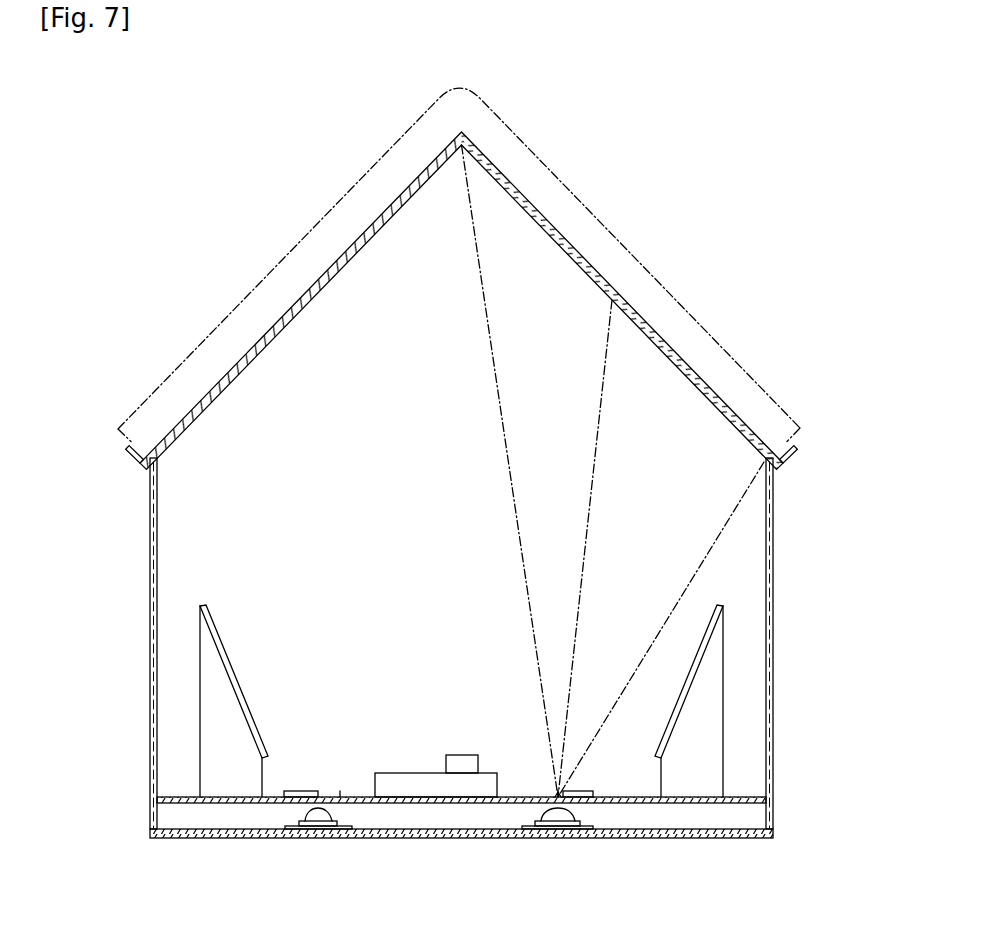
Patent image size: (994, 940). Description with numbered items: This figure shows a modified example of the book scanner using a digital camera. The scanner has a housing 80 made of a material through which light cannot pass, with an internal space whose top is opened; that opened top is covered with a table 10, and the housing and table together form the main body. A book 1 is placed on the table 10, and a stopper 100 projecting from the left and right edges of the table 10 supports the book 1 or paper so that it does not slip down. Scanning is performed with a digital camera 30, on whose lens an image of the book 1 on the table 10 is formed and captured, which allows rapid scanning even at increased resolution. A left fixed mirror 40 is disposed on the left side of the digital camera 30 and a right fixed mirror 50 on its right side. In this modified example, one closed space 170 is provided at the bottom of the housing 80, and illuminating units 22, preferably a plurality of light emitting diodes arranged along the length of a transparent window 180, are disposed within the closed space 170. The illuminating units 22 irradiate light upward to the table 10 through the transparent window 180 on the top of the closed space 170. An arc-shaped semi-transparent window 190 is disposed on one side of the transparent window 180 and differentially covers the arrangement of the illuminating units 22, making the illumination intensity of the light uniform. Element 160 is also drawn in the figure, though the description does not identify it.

The book 1 is at (612, 222).
The table 10 is at (403, 192).
The stopper 100 is at (128, 456).
The housing 80 is at (150, 683).
The closed space 170 is at (750, 808).
The left fixed mirror 40 is at (250, 733).
The right fixed mirror 50 is at (653, 750).
The digital camera 30 is at (430, 790).
The semi-transparent window 190 is at (299, 790).
The transparent window 180 is at (340, 797).
The illuminating units 22 is at (330, 809).
The sensor 160 is at (556, 802).